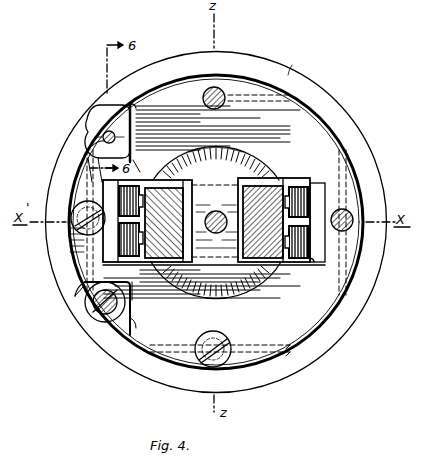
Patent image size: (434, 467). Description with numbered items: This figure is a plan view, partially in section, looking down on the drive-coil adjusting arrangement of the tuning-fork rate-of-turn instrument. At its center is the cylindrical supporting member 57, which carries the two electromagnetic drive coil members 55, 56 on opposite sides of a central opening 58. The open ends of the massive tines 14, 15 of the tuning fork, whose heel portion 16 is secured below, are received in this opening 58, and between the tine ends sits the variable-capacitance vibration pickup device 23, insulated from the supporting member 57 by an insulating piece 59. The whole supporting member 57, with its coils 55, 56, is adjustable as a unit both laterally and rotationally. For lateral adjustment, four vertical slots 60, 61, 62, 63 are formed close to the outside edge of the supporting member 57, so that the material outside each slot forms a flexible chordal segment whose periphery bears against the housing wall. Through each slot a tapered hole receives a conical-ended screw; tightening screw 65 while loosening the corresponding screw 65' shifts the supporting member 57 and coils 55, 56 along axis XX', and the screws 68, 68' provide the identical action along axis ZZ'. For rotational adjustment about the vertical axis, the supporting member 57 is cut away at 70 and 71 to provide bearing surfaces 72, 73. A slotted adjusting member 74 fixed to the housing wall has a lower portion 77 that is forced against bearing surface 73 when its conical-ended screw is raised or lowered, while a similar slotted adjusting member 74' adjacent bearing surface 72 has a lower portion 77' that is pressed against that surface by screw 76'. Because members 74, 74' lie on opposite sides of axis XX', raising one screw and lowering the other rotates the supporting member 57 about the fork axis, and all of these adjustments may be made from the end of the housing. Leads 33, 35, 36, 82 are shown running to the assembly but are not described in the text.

The tine 14 is at (167, 278).
The tine 15 is at (262, 262).
The heel portion 16 is at (100, 132).
The vibration pickup device 23 is at (227, 296).
The lead 33 is at (433, 240).
The lead 35 is at (433, 166).
The lead 36 is at (433, 268).
The drive coil member 55 is at (138, 228).
The drive coil member 56 is at (280, 230).
The cylindrical supporting member 57 is at (297, 117).
The central opening 58 is at (300, 265).
The insulating piece 59 is at (252, 160).
The vertical slot 60 is at (347, 155).
The vertical slot 61 is at (86, 162).
The vertical slot 62 is at (272, 97).
The vertical slot 63 is at (273, 360).
The conical-ended screw 65 is at (61, 211).
The conical-ended screw 65' is at (372, 206).
The screw 68 is at (246, 77).
The screw 68' is at (190, 373).
The cut-away portion 70 is at (137, 110).
The cut-away portion 71 is at (127, 335).
The bearing surface 72 is at (80, 300).
The bearing surface 73 is at (97, 135).
The slotted adjusting member 74 is at (96, 122).
The slotted adjusting member 74' is at (83, 308).
The screw 76' is at (150, 327).
The lower portion 77 is at (148, 160).
The lower portion 77' is at (146, 297).
The lead 82 is at (433, 300).